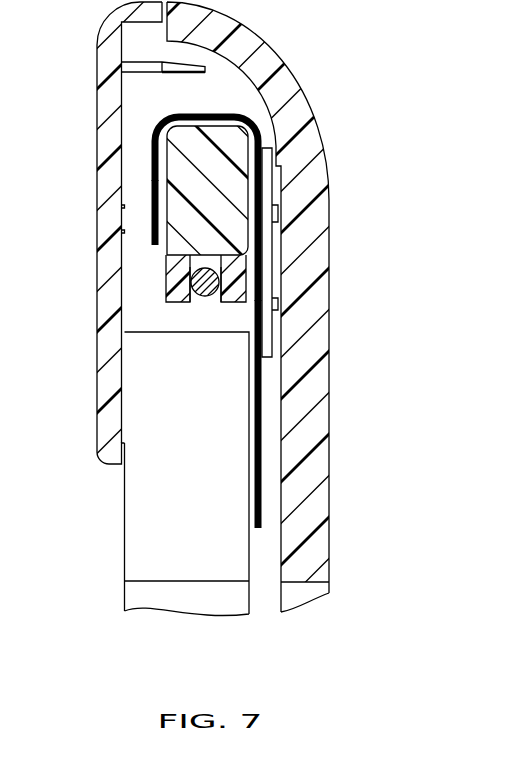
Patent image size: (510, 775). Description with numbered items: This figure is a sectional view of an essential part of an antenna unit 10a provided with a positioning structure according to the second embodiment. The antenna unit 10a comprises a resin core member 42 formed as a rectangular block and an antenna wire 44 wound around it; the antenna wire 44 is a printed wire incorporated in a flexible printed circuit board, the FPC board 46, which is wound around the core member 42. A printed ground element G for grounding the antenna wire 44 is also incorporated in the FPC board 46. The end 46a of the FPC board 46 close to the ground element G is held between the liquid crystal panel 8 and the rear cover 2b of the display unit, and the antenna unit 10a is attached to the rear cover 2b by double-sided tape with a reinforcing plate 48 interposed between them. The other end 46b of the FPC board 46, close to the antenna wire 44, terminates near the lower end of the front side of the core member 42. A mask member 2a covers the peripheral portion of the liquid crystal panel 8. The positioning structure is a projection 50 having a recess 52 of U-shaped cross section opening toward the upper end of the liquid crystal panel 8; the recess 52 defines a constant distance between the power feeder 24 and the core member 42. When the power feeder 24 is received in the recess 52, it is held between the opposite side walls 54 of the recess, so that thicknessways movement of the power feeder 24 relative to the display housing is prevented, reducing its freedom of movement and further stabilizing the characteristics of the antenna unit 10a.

The mask member 2a is at (102, 227).
The rear cover 2b is at (308, 135).
The liquid crystal panel 8 is at (136, 545).
The antenna unit 10a is at (230, 97).
The power feeder 24 is at (205, 297).
The core member 42 is at (170, 187).
The antenna wire 44 is at (146, 380).
The FPC board 46 is at (146, 380).
The end of the FPC board 46a is at (261, 533).
The end of the FPC board 46b is at (153, 247).
The reinforcing plate 48 is at (270, 237).
The projection 50 is at (255, 328).
The recess 52 is at (217, 298).
The side walls 54 is at (175, 302).
The ground element G is at (256, 495).